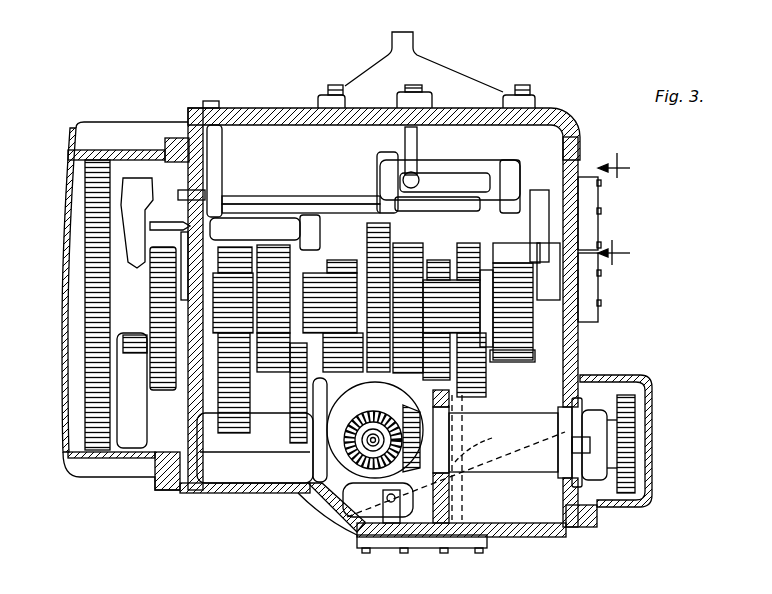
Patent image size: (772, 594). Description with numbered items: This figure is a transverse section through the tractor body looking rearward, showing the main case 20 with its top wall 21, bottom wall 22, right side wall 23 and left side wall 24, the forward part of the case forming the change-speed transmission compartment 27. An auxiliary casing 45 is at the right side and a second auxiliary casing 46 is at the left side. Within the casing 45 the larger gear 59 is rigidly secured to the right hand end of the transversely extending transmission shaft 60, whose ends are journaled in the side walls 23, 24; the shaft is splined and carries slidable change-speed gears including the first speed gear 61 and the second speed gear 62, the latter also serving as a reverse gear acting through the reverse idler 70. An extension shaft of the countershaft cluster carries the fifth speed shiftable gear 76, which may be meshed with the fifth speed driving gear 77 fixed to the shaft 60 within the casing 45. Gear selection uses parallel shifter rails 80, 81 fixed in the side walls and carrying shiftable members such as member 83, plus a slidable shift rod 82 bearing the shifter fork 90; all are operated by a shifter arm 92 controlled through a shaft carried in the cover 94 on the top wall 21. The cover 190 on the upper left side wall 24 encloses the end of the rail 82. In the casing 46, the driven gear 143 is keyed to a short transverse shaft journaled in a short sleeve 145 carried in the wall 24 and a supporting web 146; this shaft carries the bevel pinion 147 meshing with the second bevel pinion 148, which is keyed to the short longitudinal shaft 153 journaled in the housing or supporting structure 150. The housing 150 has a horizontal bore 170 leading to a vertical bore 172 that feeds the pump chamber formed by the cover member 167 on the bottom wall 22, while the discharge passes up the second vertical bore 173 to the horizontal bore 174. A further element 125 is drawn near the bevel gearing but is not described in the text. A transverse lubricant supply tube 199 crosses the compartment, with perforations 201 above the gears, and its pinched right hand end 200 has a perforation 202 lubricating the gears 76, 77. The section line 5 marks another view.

The section line 5- 5 is at (616, 211).
The main case 20 is at (257, 102).
The top wall 21 is at (283, 115).
The bottom wall 22 is at (250, 496).
The right side wall 23 is at (186, 117).
The left side wall 24 is at (582, 148).
The change-speed transmission compartment 27 is at (233, 138).
The auxiliary casing 45 is at (62, 420).
The second auxiliary casing 46 is at (655, 462).
The larger gear 59 is at (85, 320).
The transmission shaft 60 is at (451, 306).
The first speed gear 61 is at (511, 360).
The second speed gear 62 is at (280, 393).
The reverse idler 70 is at (275, 409).
The fifth speed shiftable gear 76 is at (130, 355).
The fifth speed driving gear 77 is at (165, 392).
The shifter rail 80 is at (240, 196).
The shifter rail 81 is at (255, 204).
The slidable shift rod 82 is at (187, 195).
The shiftable member 83 is at (385, 163).
The shifter fork 90 is at (133, 185).
The shifter arm 92 is at (416, 143).
The cover 94 is at (455, 80).
The bearing 125 is at (470, 408).
The driven gear 143 is at (650, 403).
The short sleeve 145 is at (520, 470).
The supporting web 146 is at (448, 527).
The bevel pinion 147 is at (413, 446).
The second bevel pinion 148 is at (338, 468).
The housing or supporting structure 150 is at (312, 490).
The short shaft 153 is at (397, 408).
The cover member 167 is at (490, 546).
The horizontal bore 170 is at (340, 520).
The vertical bore 172 is at (360, 540).
The second vertical bore 173 is at (462, 516).
The horizontal bore 174 is at (503, 442).
The enclosure member or cover 190 is at (600, 195).
The transverse lubricant supply tube 199 is at (536, 262).
The right hand end of tube 200 is at (180, 235).
The perforations or orifices 201 is at (280, 236).
The perforation 202 is at (190, 224).